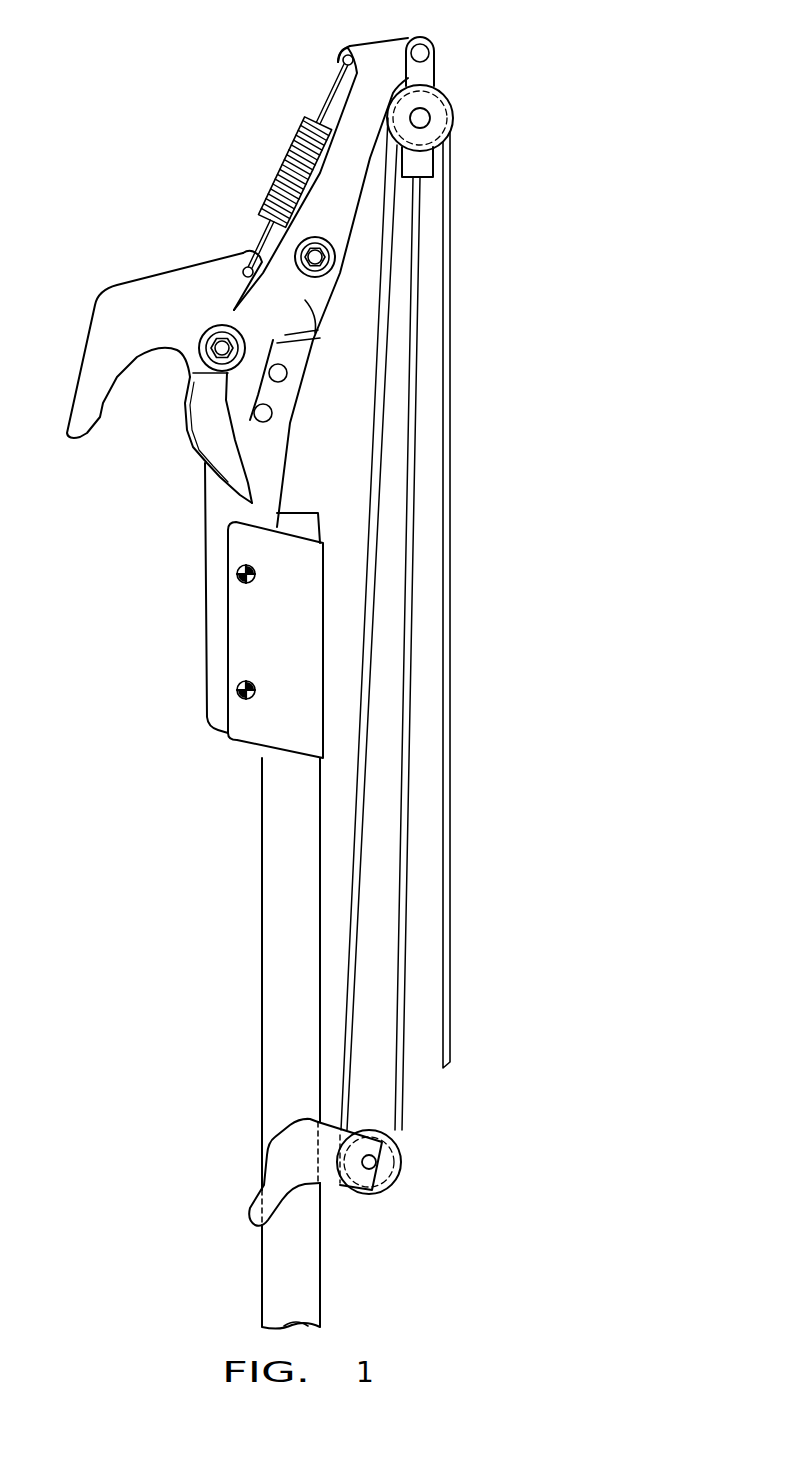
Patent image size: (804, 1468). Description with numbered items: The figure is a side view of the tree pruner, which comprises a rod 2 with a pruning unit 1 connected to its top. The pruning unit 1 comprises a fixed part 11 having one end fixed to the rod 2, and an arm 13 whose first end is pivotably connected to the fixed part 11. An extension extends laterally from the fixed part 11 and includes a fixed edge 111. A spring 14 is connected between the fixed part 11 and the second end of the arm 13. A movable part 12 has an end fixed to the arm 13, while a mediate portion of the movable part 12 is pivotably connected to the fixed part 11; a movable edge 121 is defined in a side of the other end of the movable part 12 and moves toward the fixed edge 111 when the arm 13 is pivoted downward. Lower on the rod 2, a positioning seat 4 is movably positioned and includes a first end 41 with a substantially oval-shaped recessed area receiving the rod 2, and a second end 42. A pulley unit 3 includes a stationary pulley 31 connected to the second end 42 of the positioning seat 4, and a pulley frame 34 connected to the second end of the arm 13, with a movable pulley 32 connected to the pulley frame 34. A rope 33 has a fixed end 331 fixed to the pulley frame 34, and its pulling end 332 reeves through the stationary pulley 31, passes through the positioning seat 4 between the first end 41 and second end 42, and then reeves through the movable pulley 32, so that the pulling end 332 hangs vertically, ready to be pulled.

The pruning unit 1 is at (103, 500).
The fixed part 11 is at (212, 598).
The fixed edge 111 is at (108, 390).
The movable part 12 is at (242, 316).
The movable edge 121 is at (222, 452).
The arm 13 is at (327, 190).
The spring 14 is at (300, 125).
The rod 2 is at (275, 948).
The pulley unit 3 is at (508, 662).
The stationary pulley 31 is at (403, 1162).
The movable pulley 32 is at (440, 87).
The rope 33 is at (445, 947).
The fixed end 331 is at (420, 178).
The pulling end 332 is at (442, 1068).
The pulley frame 34 is at (420, 68).
The positioning seat 4 is at (250, 1162).
The first end 41 is at (285, 1197).
The second end 42 is at (395, 1173).